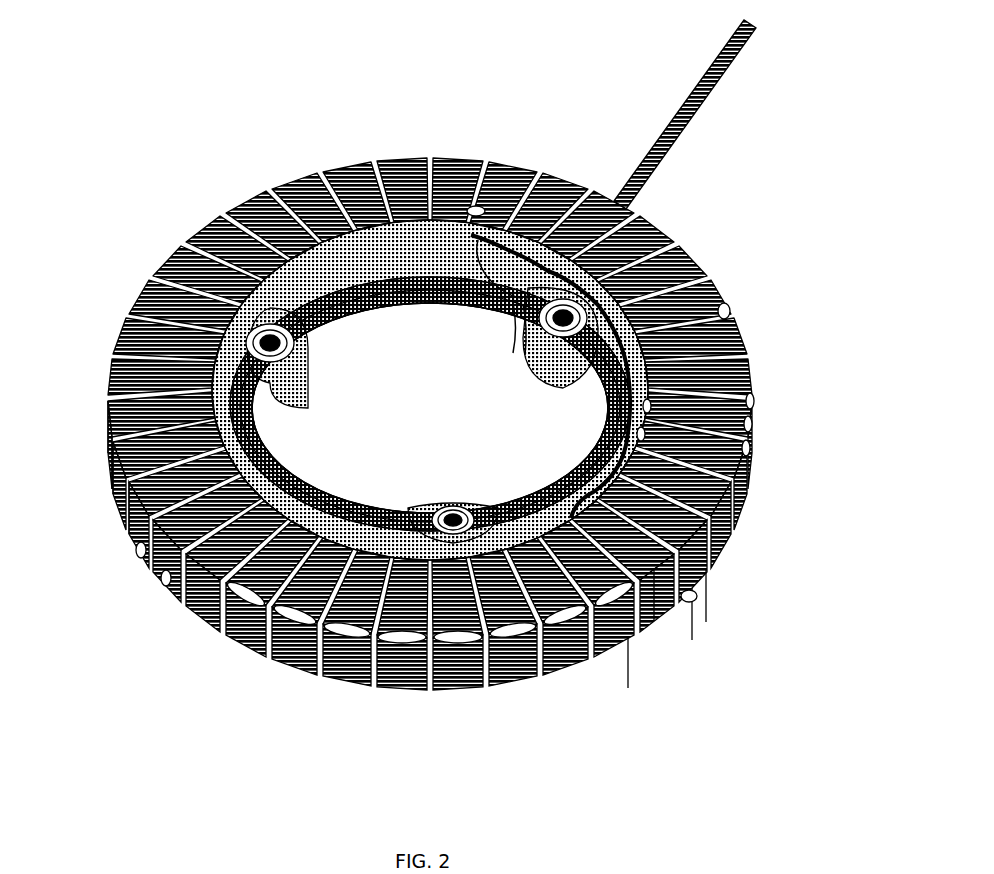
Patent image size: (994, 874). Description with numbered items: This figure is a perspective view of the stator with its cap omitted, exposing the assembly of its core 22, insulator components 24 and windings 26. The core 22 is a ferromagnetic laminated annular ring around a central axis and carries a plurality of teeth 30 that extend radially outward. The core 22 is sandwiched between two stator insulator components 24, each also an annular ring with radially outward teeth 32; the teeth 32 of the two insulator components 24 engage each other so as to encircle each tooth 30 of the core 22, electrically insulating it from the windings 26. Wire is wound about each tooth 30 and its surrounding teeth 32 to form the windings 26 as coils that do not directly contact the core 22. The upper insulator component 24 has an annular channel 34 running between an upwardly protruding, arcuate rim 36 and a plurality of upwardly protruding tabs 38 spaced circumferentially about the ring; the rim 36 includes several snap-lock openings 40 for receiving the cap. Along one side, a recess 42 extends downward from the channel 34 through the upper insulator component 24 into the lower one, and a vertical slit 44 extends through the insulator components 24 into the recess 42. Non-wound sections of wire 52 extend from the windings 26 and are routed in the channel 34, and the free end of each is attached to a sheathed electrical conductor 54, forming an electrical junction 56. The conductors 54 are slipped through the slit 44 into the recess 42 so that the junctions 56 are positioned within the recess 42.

The core 22 is at (237, 613).
The stator insulator component 24 is at (380, 310).
The windings 26 is at (200, 207).
The teeth 30 is at (557, 663).
The teeth 32 is at (655, 613).
The annular channel 34 is at (102, 410).
The rim 36 is at (578, 447).
The tabs 38 is at (740, 437).
The snap-lock openings 40 is at (320, 330).
The recess 42 is at (480, 195).
The vertical slit 44 is at (480, 330).
The non-wound sections of wire 52 is at (468, 200).
The sheathed electrical conductor 54 is at (675, 95).
The electrical junction 56 is at (517, 347).